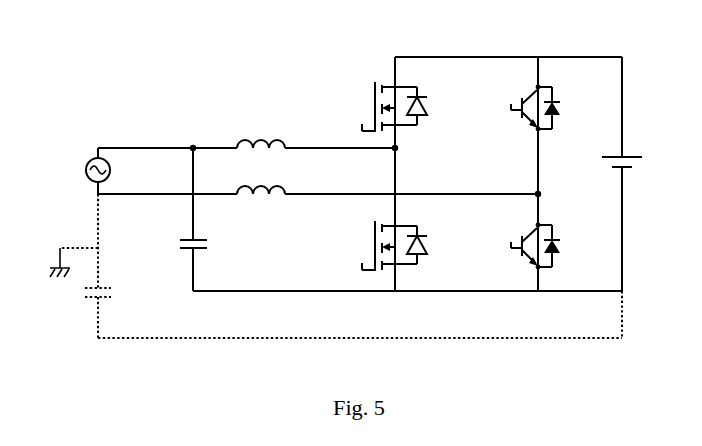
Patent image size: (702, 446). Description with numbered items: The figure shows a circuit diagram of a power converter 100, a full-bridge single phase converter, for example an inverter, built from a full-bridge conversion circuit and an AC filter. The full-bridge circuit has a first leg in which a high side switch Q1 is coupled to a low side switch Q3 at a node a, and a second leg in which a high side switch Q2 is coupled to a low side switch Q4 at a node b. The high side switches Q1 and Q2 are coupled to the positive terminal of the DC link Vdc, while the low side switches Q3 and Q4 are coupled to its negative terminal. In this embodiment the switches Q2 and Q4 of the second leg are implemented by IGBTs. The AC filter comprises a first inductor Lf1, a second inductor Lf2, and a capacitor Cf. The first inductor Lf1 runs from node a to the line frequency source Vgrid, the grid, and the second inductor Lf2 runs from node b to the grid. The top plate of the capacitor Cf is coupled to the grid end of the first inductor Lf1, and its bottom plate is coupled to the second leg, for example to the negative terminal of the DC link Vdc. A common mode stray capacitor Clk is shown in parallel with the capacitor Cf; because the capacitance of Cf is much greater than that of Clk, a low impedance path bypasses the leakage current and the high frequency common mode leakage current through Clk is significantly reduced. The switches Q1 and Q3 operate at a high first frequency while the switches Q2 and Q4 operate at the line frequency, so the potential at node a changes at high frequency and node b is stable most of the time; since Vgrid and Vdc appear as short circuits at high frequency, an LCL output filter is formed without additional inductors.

The power converter 100 is at (157, 62).
The line frequency source Vgrid is at (78, 171).
The first inductor Lf1 is at (261, 130).
The second inductor Lf2 is at (261, 176).
The capacitor Cf is at (206, 219).
The common mode stray capacitor Clk is at (341, 266).
The high side switch Q1 is at (382, 107).
The high side switch Q2 is at (521, 108).
The low side switch Q3 is at (382, 246).
The low side switch Q4 is at (524, 246).
The DC link Vdc is at (637, 174).